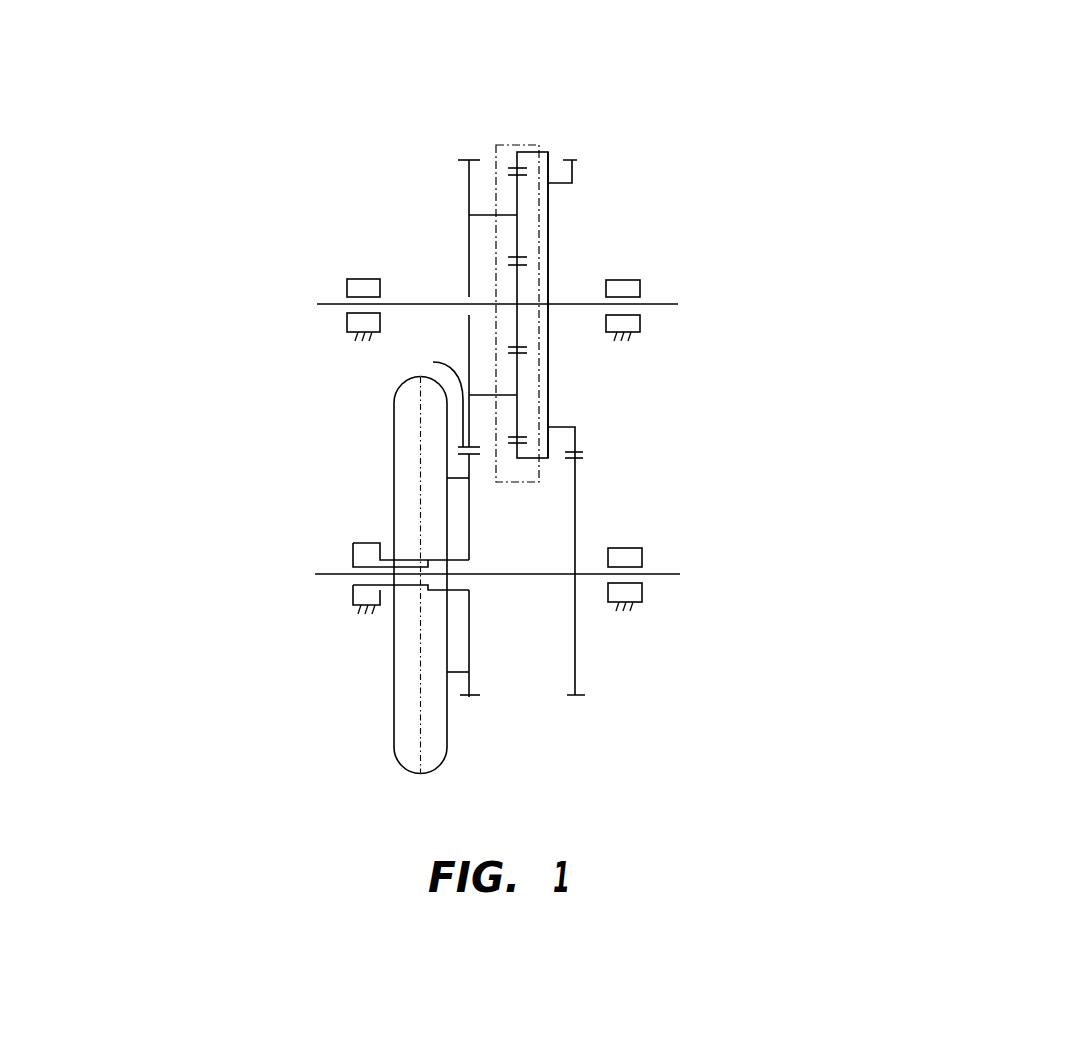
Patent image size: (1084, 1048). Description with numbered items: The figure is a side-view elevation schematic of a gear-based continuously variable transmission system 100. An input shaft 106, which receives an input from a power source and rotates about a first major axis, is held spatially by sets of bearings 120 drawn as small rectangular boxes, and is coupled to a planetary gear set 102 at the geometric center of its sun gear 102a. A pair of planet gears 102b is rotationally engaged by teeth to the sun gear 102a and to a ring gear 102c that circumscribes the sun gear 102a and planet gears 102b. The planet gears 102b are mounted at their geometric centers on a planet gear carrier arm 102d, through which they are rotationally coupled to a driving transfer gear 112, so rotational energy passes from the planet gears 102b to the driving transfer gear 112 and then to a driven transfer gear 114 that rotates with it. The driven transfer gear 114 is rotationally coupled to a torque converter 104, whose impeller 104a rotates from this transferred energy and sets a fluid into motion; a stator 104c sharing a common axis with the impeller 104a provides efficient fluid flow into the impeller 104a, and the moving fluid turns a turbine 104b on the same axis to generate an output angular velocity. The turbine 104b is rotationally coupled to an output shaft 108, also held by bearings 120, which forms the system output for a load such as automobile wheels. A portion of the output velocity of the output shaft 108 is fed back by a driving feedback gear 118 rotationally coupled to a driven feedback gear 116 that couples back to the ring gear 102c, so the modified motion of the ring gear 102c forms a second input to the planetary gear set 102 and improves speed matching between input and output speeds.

The continuously variable transmission system 100 is at (662, 80).
The planetary gear set 102 is at (507, 284).
The sun gear 102a is at (518, 273).
The planet gears 102b is at (518, 198).
The ring gear 102c is at (527, 170).
The planet gear carrier arm 102d is at (488, 215).
The torque converter 104 is at (358, 575).
The impeller 104a is at (396, 742).
The turbine 104b is at (447, 742).
The stator 104c is at (342, 553).
The input shaft 106 is at (314, 300).
The output shaft 108 is at (681, 564).
The driving transfer gear 112 is at (429, 523).
The driven transfer gear 114 is at (475, 455).
The driven feedback gear 116 is at (583, 452).
The driving feedback gear 118 is at (583, 458).
The bearings 120 is at (623, 547).